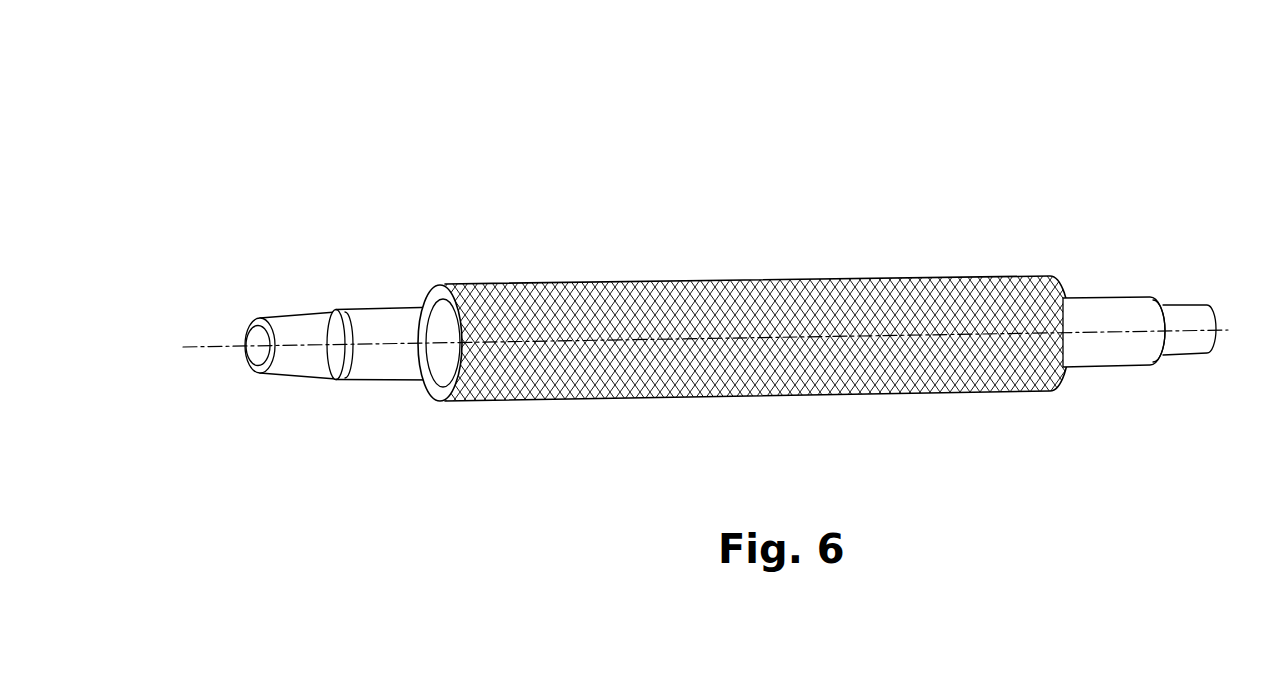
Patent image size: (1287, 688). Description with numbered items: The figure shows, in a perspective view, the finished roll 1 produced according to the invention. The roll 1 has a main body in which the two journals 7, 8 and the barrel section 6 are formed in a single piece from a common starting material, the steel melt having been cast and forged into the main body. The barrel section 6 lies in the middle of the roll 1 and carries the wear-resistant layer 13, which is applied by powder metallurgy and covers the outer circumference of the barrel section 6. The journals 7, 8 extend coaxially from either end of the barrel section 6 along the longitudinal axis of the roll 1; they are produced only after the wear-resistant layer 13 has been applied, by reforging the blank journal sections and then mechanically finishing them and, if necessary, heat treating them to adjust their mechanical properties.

The roll 1 is at (707, 218).
The barrel section 6 is at (437, 292).
The journal 7 is at (362, 327).
The journal 8 is at (1117, 317).
The wear-resistant layer 13 is at (775, 307).